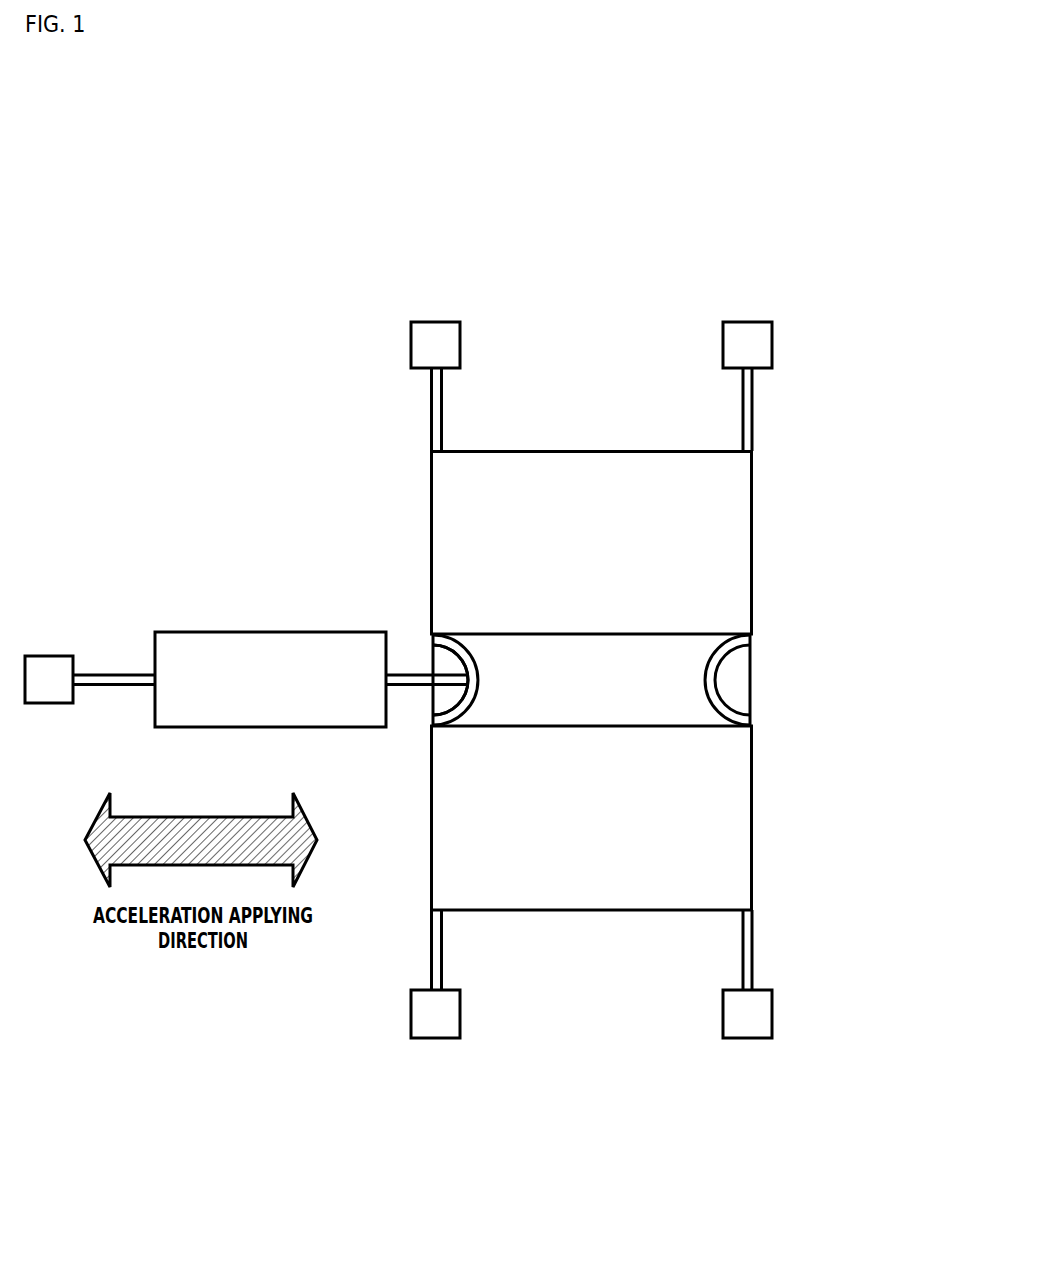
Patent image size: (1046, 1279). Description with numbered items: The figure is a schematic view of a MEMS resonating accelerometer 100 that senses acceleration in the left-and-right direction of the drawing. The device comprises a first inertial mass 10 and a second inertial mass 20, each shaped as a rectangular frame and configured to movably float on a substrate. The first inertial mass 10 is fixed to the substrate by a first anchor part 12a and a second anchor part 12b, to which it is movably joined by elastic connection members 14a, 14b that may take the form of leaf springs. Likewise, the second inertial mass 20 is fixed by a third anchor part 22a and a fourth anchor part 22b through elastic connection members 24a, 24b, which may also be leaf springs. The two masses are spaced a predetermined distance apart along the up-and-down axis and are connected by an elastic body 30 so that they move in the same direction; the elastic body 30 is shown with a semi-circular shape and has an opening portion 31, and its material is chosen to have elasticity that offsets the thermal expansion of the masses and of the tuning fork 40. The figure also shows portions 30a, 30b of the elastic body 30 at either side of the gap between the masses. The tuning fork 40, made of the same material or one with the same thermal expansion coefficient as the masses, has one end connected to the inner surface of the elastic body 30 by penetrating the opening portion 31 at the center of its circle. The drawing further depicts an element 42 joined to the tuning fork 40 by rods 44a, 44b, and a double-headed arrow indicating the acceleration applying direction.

The MEMS resonating accelerometer 100 is at (549, 198).
The first inertial mass 10 is at (586, 451).
The second inertial mass 20 is at (592, 911).
The first anchor part 12a is at (434, 321).
The second anchor part 12b is at (745, 321).
The elastic connection member 14a is at (430, 412).
The elastic connection member 14b is at (754, 412).
The third anchor part 22a is at (433, 1040).
The fourth anchor part 22b is at (745, 1040).
The elastic connection member 24a is at (430, 953).
The elastic connection member 24b is at (754, 953).
The elastic body 30 is at (669, 680).
The first hinge 30a is at (477, 694).
The second hinge 30b is at (717, 663).
The opening portion 31 is at (425, 660).
The tuning fork 40 is at (263, 631).
The fixed part of driving unit 42 is at (57, 655).
The first connection rod 44a is at (113, 688).
The second connection rod 44b is at (405, 688).